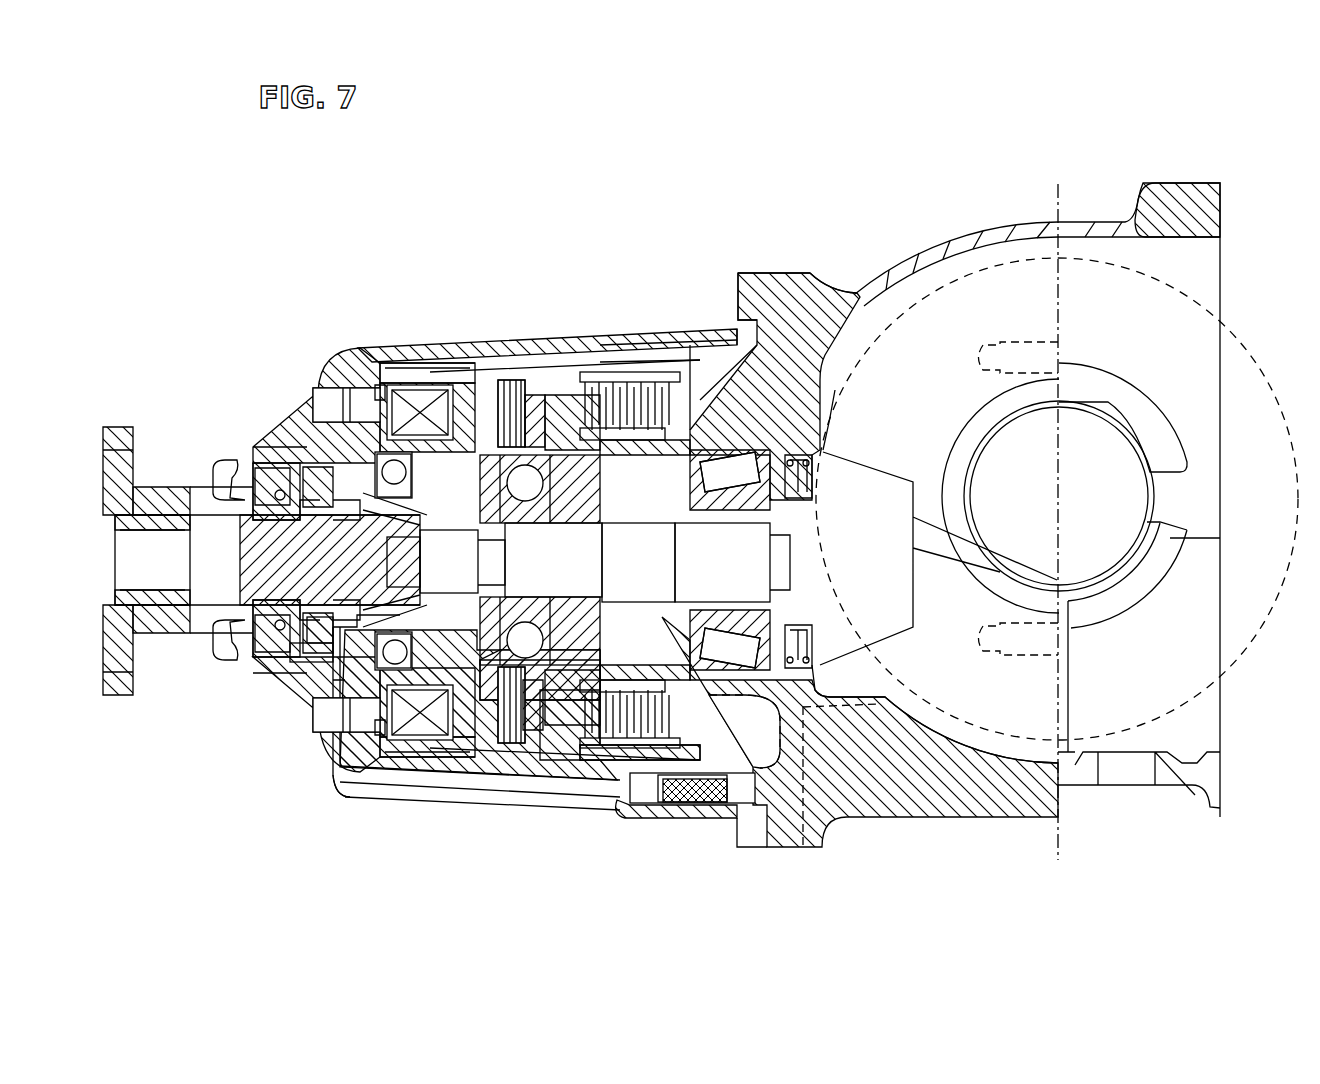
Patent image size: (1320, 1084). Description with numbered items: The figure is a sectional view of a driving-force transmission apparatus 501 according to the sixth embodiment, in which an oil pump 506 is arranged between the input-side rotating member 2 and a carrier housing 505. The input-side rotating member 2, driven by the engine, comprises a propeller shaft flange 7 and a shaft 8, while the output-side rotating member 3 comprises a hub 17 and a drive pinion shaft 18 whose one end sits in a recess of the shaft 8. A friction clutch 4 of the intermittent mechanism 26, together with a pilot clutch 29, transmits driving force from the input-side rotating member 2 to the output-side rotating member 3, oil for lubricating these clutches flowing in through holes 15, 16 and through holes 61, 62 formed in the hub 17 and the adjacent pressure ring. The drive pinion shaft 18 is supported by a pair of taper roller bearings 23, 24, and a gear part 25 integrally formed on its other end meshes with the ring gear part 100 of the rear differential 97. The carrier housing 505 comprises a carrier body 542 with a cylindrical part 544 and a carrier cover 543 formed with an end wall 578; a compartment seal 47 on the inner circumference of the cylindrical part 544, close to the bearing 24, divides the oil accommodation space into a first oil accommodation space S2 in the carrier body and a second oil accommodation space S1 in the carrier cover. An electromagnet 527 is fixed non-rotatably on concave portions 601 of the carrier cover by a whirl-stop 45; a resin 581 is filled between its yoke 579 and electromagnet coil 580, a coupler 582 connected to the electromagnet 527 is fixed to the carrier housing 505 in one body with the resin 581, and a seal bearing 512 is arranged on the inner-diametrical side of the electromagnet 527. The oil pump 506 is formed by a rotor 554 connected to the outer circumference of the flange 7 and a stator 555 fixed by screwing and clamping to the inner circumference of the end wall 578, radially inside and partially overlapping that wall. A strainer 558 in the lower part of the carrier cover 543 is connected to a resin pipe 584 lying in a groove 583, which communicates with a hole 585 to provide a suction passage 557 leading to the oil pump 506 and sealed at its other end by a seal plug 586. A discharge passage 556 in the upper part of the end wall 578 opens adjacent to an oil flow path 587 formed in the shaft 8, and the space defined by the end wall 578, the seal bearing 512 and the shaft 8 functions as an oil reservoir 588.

The input-side rotating member 2 is at (195, 478).
The output-side rotating member 3 is at (420, 778).
The friction clutch 4 is at (640, 360).
The propeller shaft flange 7 is at (182, 640).
The shaft 8 is at (203, 572).
The hole 15 is at (505, 775).
The hole 16 is at (612, 782).
The hub 17 is at (518, 505).
The drive pinion shaft 18 is at (561, 561).
The taper roller bearing 23 is at (630, 518).
The taper roller bearing 24 is at (732, 562).
The gear part 25 is at (882, 472).
The intermittent mechanism 26 is at (582, 782).
The pilot clutch 29 is at (535, 350).
The whirl-stop 45 is at (392, 362).
The compartment seal 47 is at (792, 500).
The hole 61 is at (600, 398).
The hole 62 is at (555, 380).
The rear differential 97 is at (1012, 190).
The ring gear part 100 is at (1250, 335).
The driving-force transmission apparatus 501 is at (708, 178).
The carrier housing 505 is at (770, 268).
The oil pump 506 is at (310, 665).
The seal bearing 512 is at (446, 561).
The electromagnet 527 is at (452, 356).
The carrier body 542 is at (820, 290).
The carrier cover 543 is at (745, 280).
The cylindrical part 544 is at (715, 378).
The rotor 554 is at (350, 515).
The stator 555 is at (262, 520).
The discharge passage 556 is at (328, 455).
The suction passage 557 is at (400, 792).
The strainer 558 is at (690, 806).
The end wall 578 is at (282, 452).
The yoke 579 is at (410, 370).
The electromagnet coil 580 is at (455, 400).
The resin 581 is at (360, 420).
The coupler 582 is at (320, 392).
The groove 583 is at (468, 778).
The resin pipe 584 is at (548, 783).
The hole 585 is at (330, 755).
The seal plug 586 is at (333, 782).
The oil flow path 587 is at (395, 505).
The oil reservoir 588 is at (370, 548).
The concave portion 601 is at (510, 345).
The second oil accommodation space S1 is at (650, 360).
The first oil accommodation space S2 is at (885, 315).